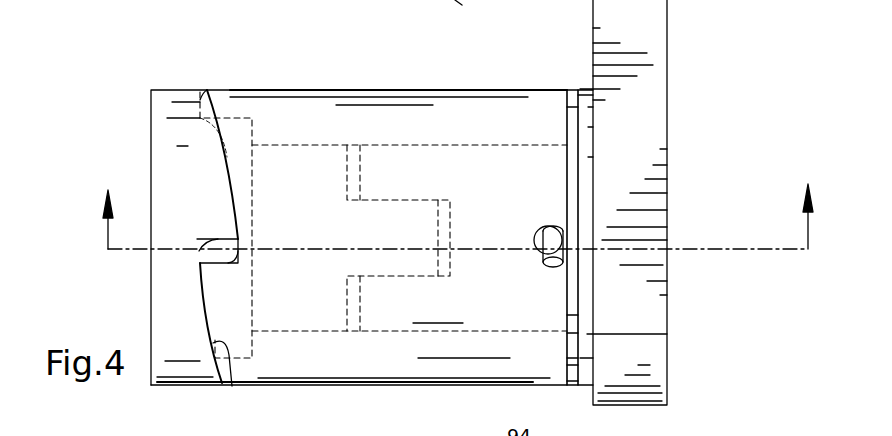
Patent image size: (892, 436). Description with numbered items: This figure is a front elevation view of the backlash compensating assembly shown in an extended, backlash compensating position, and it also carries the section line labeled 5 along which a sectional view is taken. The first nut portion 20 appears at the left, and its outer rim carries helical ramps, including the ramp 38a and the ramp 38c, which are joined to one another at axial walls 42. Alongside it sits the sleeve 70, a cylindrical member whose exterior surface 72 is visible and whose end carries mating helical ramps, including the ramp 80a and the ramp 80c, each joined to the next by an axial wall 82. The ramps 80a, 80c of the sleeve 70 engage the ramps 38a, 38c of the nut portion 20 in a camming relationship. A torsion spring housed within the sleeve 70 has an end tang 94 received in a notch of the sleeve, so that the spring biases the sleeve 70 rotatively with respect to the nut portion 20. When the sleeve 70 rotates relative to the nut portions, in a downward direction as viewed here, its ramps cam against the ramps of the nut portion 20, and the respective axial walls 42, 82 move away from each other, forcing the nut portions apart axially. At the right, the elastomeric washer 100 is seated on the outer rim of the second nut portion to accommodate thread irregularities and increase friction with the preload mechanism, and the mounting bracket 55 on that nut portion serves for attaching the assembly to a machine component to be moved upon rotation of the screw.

The first nut portion 20 is at (168, 82).
The sleeve 70 is at (372, 87).
The exterior surface 72 is at (405, 90).
The elastomeric washer 100 is at (573, 107).
The mounting bracket 55 is at (643, 28).
The ramp 38c is at (228, 182).
The ramp 80c is at (227, 160).
The ramp 38a is at (207, 315).
The ramp 80a is at (232, 386).
The axial wall 42 is at (200, 261).
The axial wall 82 is at (238, 251).
The end tang 94 is at (548, 241).
The section line 5- 5 is at (458, 204).